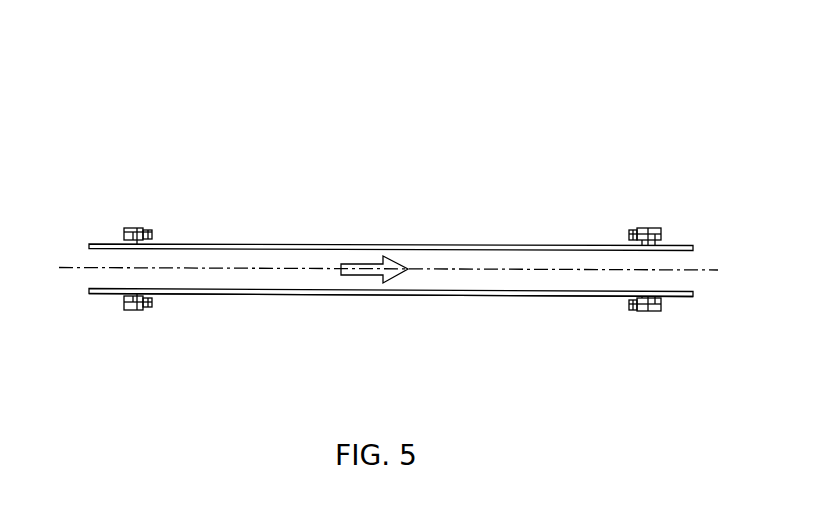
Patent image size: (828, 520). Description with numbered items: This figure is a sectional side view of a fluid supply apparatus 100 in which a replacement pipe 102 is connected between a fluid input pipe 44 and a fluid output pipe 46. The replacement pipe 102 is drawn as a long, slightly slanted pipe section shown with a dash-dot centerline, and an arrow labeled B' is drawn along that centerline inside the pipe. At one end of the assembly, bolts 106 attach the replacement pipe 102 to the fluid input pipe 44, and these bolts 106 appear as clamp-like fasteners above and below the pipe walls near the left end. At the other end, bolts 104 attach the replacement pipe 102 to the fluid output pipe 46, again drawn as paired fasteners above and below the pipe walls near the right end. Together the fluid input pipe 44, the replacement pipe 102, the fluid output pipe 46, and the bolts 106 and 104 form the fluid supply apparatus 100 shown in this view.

The fluid supply apparatus 100 is at (354, 104).
The fluid input pipe 44 is at (102, 294).
The fluid output pipe 46 is at (680, 244).
The replacement pipe 102 is at (525, 298).
The bolts 104 is at (643, 313).
The bolts 106 is at (137, 311).
The direction arrow B' is at (382, 302).